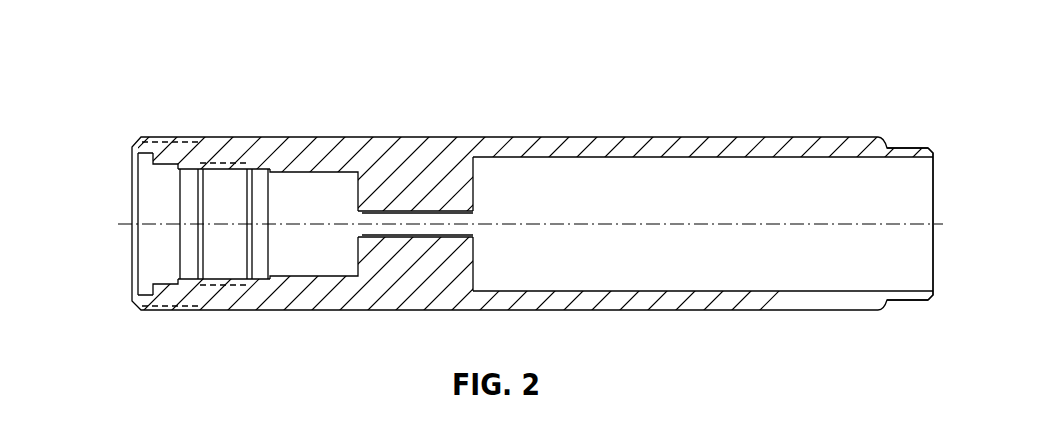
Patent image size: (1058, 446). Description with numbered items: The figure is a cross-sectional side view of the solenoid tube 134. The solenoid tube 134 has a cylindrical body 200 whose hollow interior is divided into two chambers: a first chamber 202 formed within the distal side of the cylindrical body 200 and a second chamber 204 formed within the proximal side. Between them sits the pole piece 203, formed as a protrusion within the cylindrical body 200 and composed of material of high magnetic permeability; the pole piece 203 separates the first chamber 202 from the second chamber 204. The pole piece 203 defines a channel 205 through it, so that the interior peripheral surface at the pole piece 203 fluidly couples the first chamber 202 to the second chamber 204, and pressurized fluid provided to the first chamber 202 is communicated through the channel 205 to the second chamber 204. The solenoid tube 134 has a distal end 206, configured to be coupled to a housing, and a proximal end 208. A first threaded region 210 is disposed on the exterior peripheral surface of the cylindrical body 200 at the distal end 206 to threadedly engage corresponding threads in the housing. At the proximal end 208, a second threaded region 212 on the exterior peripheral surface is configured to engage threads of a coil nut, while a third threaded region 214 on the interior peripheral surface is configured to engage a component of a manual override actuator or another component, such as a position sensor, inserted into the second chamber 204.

The solenoid tube 134 is at (136, 38).
The cylindrical body 200 is at (602, 147).
The first chamber 202 is at (665, 160).
The pole piece 203 is at (429, 167).
The second chamber 204 is at (329, 194).
The channel 205 is at (387, 209).
The distal end 206 is at (842, 126).
The proximal end 208 is at (193, 101).
The first threaded region 210 is at (920, 145).
The second threaded region 212 is at (151, 133).
The third threaded region 214 is at (247, 168).